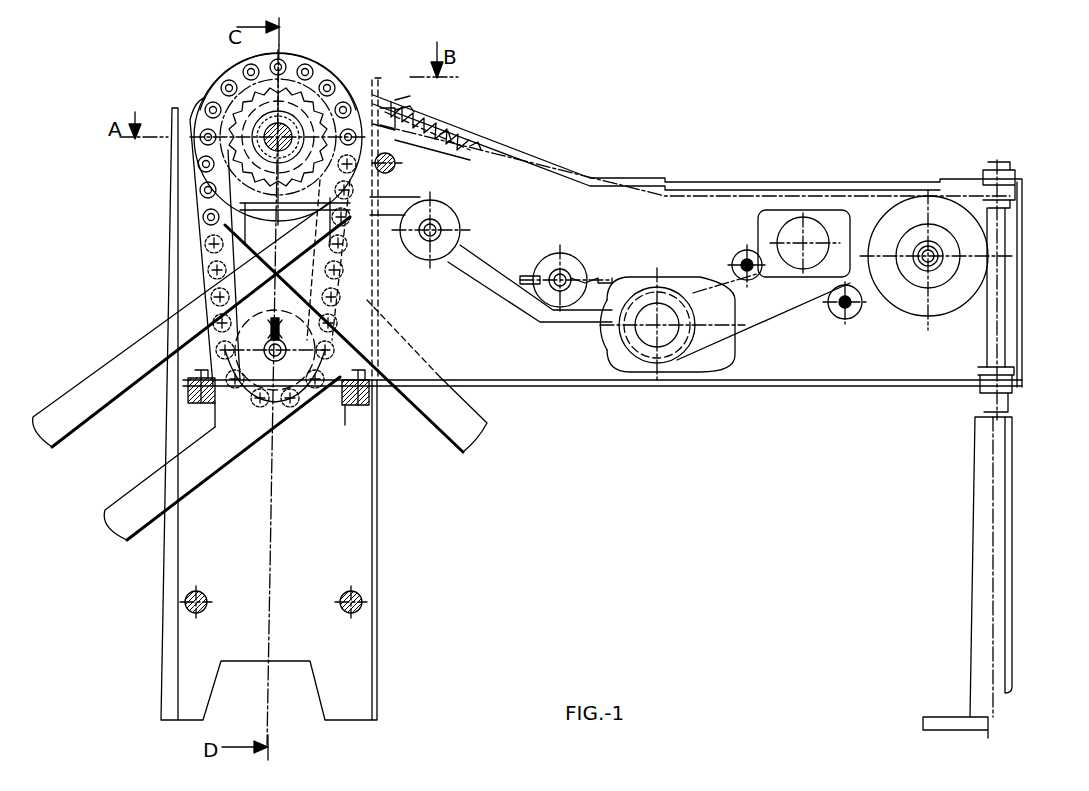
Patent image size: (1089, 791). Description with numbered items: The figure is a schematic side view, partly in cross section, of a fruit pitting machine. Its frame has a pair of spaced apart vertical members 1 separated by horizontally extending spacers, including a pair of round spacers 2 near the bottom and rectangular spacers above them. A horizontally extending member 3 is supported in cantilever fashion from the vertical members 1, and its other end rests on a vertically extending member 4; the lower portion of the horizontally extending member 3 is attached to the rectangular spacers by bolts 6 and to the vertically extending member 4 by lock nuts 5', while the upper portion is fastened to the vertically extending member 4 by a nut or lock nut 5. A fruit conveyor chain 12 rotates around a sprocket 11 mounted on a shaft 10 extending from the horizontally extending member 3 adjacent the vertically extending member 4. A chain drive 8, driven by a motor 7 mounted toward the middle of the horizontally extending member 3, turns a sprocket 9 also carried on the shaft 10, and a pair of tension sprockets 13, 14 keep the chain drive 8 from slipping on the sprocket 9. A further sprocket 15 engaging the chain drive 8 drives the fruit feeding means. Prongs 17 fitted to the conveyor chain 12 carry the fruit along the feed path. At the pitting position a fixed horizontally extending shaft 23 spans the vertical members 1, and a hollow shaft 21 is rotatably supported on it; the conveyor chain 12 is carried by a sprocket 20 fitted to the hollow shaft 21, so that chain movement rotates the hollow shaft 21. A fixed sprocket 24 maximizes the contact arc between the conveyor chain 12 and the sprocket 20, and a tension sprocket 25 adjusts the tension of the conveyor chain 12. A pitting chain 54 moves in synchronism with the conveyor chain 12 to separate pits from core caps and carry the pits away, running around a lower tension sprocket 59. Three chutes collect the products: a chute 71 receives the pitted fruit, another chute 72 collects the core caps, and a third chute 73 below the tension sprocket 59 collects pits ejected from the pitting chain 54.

The vertical member 1 is at (378, 499).
The round spacers 2 is at (353, 608).
The horizontally extending member 3 is at (560, 357).
The vertically extending member 4 is at (997, 513).
The nut or lock nut 5 is at (1009, 267).
The nuts or lock nuts 5' is at (1027, 404).
The bolts 6 is at (365, 387).
The motor 7 is at (677, 362).
The chain drive 8 is at (762, 313).
The sprocket 9 is at (958, 270).
The shaft 10 is at (942, 255).
The sprocket 11 is at (978, 227).
The fruit conveyor chain 12 is at (778, 210).
The tension sprocket 13 is at (737, 248).
The tension sprocket 14 is at (848, 318).
The sprocket 15 is at (827, 217).
The prongs 17 is at (320, 100).
The sprocket 20 is at (215, 159).
The hollow shaft 21 is at (213, 103).
The fixed horizontally extending shaft 23 is at (213, 132).
The fixed sprocket 24 is at (438, 213).
The tension sprocket 25 is at (550, 265).
The pitting chain 54 is at (203, 235).
The tension sprocket 59 is at (220, 353).
The chute 71 is at (460, 432).
The chute 72 is at (120, 365).
The chute 73 is at (130, 510).